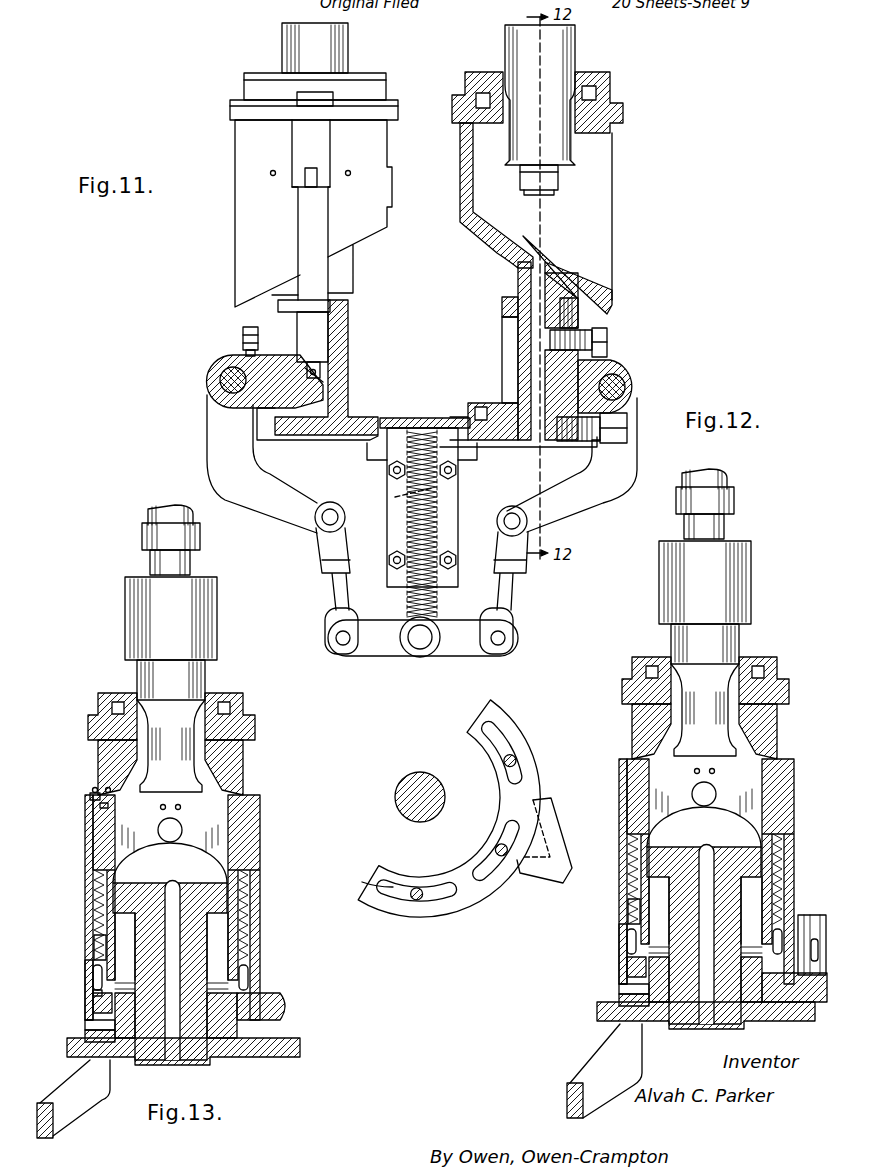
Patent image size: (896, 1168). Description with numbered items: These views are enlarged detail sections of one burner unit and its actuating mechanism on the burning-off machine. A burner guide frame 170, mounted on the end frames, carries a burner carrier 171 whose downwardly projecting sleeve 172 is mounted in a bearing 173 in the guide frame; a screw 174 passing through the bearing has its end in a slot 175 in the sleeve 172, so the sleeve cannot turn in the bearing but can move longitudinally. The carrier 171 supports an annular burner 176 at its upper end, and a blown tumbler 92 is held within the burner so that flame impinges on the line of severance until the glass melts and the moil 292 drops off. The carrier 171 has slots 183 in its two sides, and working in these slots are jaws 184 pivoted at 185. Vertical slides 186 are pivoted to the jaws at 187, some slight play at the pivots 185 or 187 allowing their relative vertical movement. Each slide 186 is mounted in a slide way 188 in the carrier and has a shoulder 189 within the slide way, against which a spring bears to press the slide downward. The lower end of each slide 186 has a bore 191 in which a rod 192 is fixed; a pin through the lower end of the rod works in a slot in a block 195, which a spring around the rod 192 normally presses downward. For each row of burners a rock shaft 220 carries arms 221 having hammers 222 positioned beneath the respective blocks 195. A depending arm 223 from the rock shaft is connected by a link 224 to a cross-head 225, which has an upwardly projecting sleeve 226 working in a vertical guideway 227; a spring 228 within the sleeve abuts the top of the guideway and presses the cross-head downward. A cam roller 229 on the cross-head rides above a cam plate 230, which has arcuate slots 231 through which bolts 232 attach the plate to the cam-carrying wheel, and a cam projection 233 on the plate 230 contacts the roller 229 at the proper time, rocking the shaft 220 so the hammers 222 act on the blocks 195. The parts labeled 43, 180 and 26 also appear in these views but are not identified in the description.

In FIG. 11, the blown tumblers 92 is at (281, 45).
In FIG. 11, the jaws 184 is at (325, 138).
In FIG. 13, the jaws 184 is at (100, 763).
In FIG. 11, the pivots 187 is at (292, 173).
In FIG. 13, the pivots 187 is at (90, 789).
In FIG. 11, the pivots 185 is at (350, 172).
In FIG. 13, the pivots 185 is at (110, 791).
In FIG. 11, the vertical slides 186 is at (305, 183).
In FIG. 13, the vertical slides 186 is at (90, 797).
In FIG. 11, the slide way 188 is at (329, 208).
In FIG. 13, the slide way 188 is at (90, 853).
In FIG. 12, the slide way 188 is at (608, 851).
In FIG. 11, the bore 191 is at (320, 338).
In FIG. 13, the bore 191 is at (86, 921).
In FIG. 12, the bore 191 is at (698, 929).
In FIG. 11, the block 195 is at (323, 366).
In FIG. 13, the block 195 is at (92, 1001).
In FIG. 12, the block 195 is at (603, 965).
In FIG. 11, the arms 221 is at (273, 380).
In FIG. 13, the arms 221 is at (96, 1047).
In FIG. 11, the hammers 222 is at (323, 382).
In FIG. 13, the hammers 222 is at (92, 1031).
In FIG. 12, the hammers 222 is at (692, 1010).
In FIG. 11, the rock shaft 220 is at (212, 387).
In FIG. 13, the rock shaft 220 is at (92, 1018).
In FIG. 11, the burner guide frame 170 is at (340, 413).
In FIG. 11, the depending arm 223 is at (270, 481).
In FIG. 13, the depending arm 223 is at (78, 1076).
In FIG. 12, the depending arm 223 is at (624, 1071).
In FIG. 11, the annular burner 176 is at (612, 79).
In FIG. 13, the annular burner 176 is at (244, 704).
In FIG. 12, the annular burner 176 is at (690, 680).
In FIG. 11, the slots 183 is at (552, 193).
In FIG. 13, the slots 183 is at (106, 806).
In FIG. 11, the burner carrier 171 is at (610, 232).
In FIG. 13, the burner carrier 171 is at (246, 747).
In FIG. 12, the burner carrier 171 is at (687, 836).
In FIG. 11, the sleeve 172 is at (517, 330).
In FIG. 11, the bearing 173 is at (579, 305).
In FIG. 11, the slot 175 is at (579, 331).
In FIG. 11, the screw 174 is at (607, 342).
In FIG. 11, the spring 228 is at (438, 490).
In FIG. 11, the vertical guideway 227 is at (452, 512).
In FIG. 11, the link 224 is at (330, 591).
In FIG. 11, the sleeve 226 is at (439, 602).
In FIG. 11, the cam roller 229 is at (405, 652).
In FIG. 11, the cross-head 225 is at (480, 655).
In FIG. 13, the drum 43 is at (219, 618).
In FIG. 12, the drum 43 is at (684, 546).
In FIG. 13, the moil 292 is at (206, 673).
In FIG. 12, the moil 292 is at (669, 689).
In FIG. 13, the casing 180 is at (85, 822).
In FIG. 13, the shoulder 189 is at (88, 888).
In FIG. 13, the rod 192 is at (96, 943).
In FIG. 12, the shaft 26 is at (395, 797).
In FIG. 12, the cam plate 230 is at (486, 706).
In FIG. 12, the arcuate slots 231 is at (384, 888).
In FIG. 12, the bolts 232 is at (417, 901).
In FIG. 12, the cam projection 233 is at (566, 850).